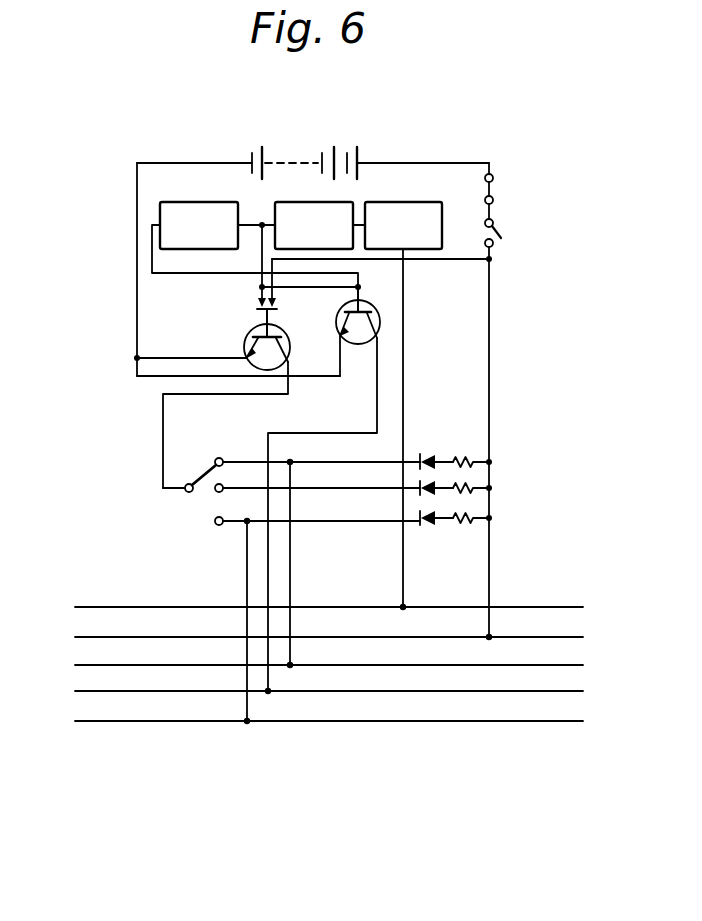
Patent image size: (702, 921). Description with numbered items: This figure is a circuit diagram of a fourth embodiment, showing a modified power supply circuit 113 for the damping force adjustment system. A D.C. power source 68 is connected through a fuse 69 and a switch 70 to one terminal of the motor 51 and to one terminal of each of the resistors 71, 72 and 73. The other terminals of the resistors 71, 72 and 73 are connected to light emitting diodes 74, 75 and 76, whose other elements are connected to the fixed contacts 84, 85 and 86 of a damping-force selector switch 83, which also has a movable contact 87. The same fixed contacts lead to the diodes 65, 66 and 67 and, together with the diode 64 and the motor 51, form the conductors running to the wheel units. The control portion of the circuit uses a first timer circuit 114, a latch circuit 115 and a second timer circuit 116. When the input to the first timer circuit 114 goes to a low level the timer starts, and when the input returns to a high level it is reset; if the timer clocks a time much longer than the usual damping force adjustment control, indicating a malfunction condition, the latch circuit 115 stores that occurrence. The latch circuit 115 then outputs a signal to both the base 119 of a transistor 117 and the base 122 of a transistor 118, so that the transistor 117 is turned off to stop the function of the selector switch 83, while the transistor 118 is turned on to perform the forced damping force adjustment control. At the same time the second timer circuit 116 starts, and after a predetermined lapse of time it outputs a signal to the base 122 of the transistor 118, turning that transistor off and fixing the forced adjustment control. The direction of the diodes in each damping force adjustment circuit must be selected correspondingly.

The D.C. power source 68 is at (302, 159).
The fuse 69 is at (494, 184).
The switch 70 is at (502, 240).
The resistor 71 is at (461, 454).
The resistor 72 is at (473, 486).
The resistor 73 is at (461, 526).
The light emitting diode 74 is at (428, 452).
The light emitting diode 75 is at (420, 484).
The light emitting diode 76 is at (418, 523).
The damping-force selector switch 83 is at (176, 531).
The fixed contact 84 is at (220, 456).
The fixed contact 85 is at (216, 493).
The fixed contact 86 is at (222, 527).
The movable contact 87 is at (184, 493).
The power supply circuit 113 is at (330, 760).
The first timer circuit 114 is at (405, 201).
The latch circuit 115 is at (289, 201).
The second timer circuit 116 is at (187, 201).
The transistor 117 is at (238, 336).
The transistor 118 is at (392, 322).
The base 119 is at (273, 332).
The base 122 is at (370, 304).
The diode 64 is at (327, 607).
The motor 51 is at (329, 637).
The diode 65 is at (327, 665).
The diode 66 is at (327, 691).
The diode 67 is at (326, 721).